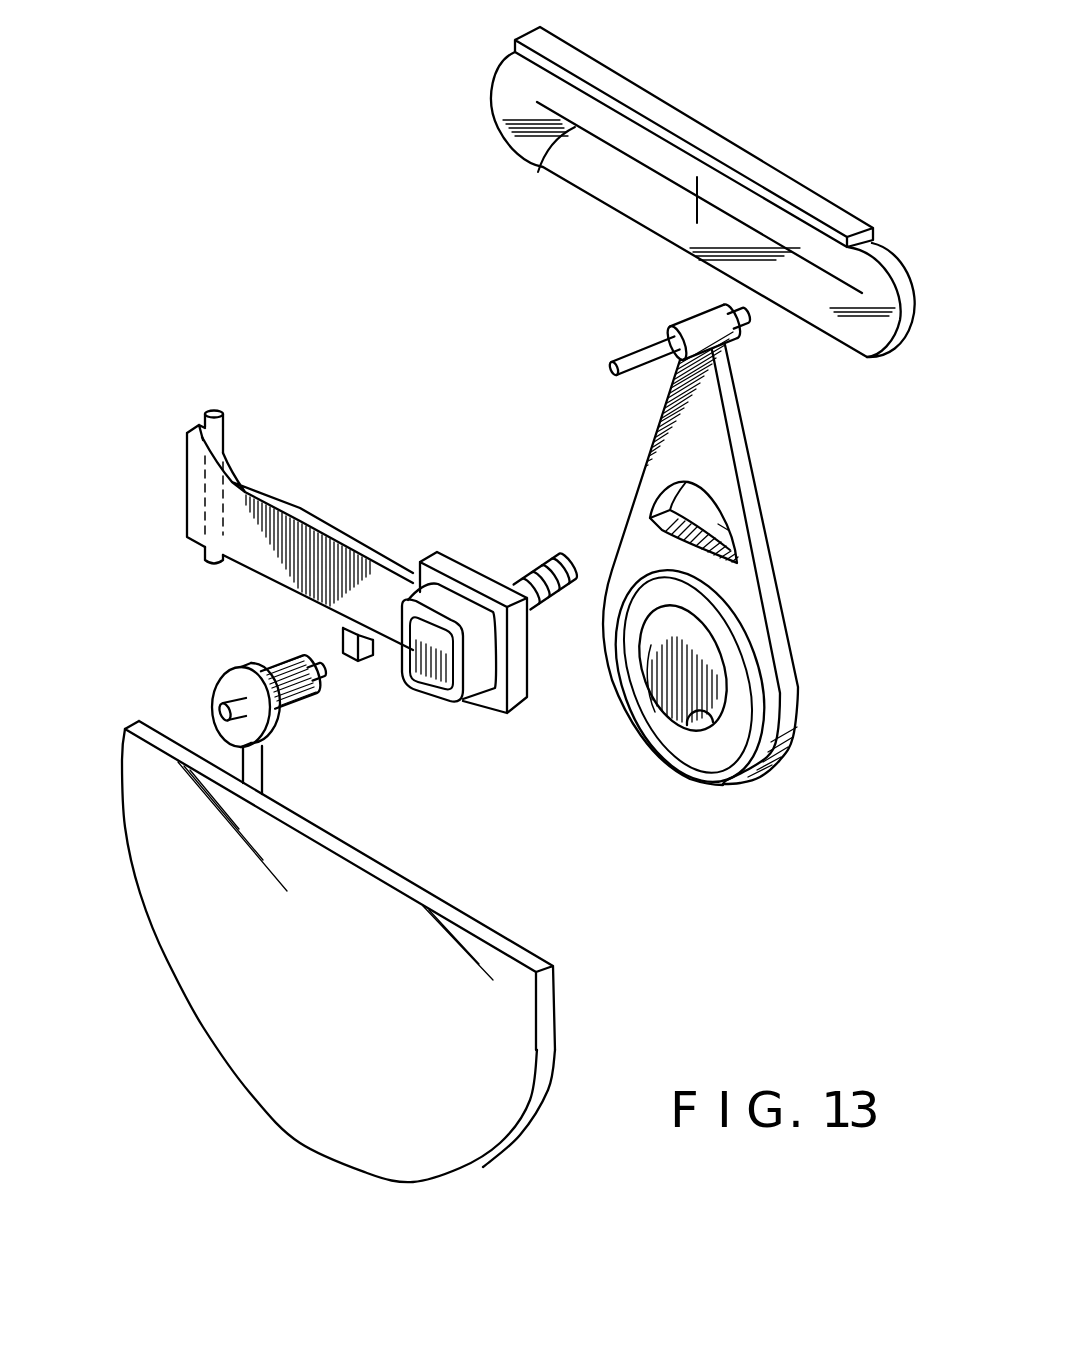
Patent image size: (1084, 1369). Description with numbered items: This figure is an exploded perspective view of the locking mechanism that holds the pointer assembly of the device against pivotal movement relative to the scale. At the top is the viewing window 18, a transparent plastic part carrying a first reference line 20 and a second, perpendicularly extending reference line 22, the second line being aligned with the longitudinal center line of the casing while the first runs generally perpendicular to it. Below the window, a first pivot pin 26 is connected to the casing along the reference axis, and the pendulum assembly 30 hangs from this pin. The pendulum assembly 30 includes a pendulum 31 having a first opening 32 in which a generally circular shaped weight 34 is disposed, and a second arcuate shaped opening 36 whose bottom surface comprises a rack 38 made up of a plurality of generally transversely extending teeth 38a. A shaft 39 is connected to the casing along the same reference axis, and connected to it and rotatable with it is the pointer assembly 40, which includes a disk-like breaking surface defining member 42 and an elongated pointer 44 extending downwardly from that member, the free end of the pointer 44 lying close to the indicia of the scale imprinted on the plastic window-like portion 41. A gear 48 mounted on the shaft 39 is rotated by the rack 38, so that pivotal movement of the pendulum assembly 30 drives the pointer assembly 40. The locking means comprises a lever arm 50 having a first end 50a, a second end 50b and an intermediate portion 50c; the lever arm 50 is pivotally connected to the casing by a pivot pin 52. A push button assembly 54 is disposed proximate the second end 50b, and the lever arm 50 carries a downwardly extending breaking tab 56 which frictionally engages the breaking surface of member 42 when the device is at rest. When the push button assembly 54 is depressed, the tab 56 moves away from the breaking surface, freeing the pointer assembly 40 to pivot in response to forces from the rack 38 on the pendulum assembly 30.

The viewing window 18 is at (656, 192).
The first reference line 20 is at (687, 197).
The second reference line 22 is at (645, 222).
The first pivot pin 26 is at (652, 341).
The pendulum assembly 30 is at (714, 567).
The pendulum 31 is at (791, 567).
The first opening 32 is at (685, 766).
The weight 34 is at (670, 682).
The second arcuate shaped opening 36 is at (653, 498).
The rack 38 is at (652, 522).
The teeth 38a is at (780, 516).
The shaft 39 is at (285, 641).
The pointer assembly 40 is at (200, 705).
The window-like portion 41 is at (338, 955).
The breaking surface defining member 42 is at (198, 672).
The pointer 44 is at (286, 775).
The gear 48 is at (295, 708).
The lever arm 50 is at (307, 543).
The first end 50a is at (160, 486).
The second end 50b is at (500, 665).
The intermediate portion 50c is at (323, 547).
The pivot pin 52 is at (171, 470).
The push button assembly 54 is at (449, 674).
The breaking tab 56 is at (365, 676).